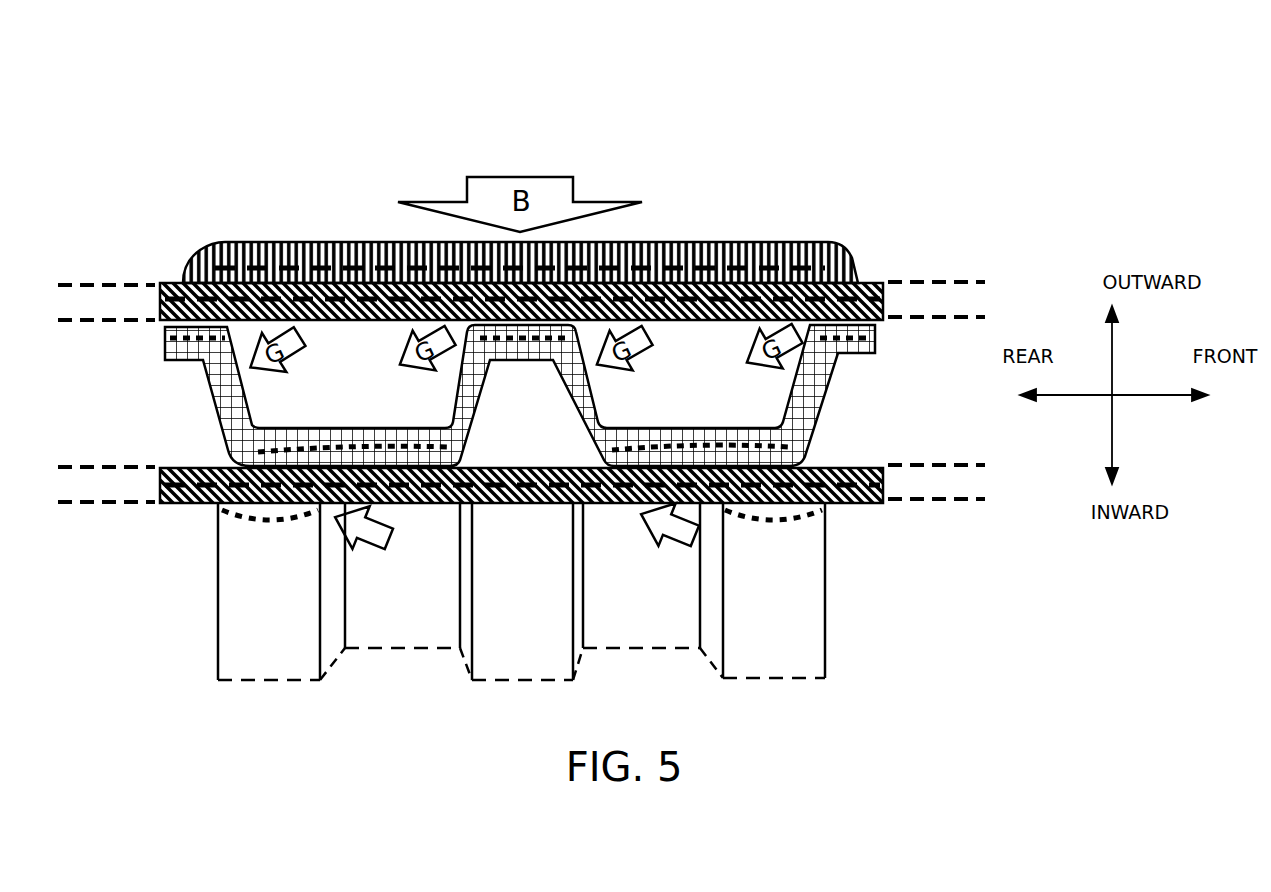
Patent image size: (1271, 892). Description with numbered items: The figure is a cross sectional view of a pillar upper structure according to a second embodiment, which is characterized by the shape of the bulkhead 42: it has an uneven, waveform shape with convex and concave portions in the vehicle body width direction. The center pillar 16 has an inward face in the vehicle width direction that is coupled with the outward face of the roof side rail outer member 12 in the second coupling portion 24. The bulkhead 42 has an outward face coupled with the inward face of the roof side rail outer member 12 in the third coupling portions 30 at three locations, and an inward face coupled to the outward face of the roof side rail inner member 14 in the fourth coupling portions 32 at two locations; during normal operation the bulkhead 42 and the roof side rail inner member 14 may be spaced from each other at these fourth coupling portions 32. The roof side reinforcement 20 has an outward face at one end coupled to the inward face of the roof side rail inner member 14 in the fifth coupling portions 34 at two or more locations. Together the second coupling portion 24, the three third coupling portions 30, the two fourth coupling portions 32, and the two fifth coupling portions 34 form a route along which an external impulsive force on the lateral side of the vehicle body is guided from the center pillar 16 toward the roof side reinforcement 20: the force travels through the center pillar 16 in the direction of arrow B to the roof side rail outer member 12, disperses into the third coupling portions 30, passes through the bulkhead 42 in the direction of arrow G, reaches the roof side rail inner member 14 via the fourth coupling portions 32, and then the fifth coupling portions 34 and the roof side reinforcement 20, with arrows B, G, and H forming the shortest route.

The roof side rail outer member 12 is at (883, 290).
The roof side rail inner member 14 is at (885, 485).
The center pillar 16 is at (268, 243).
The roof side reinforcement 20 is at (787, 615).
The second coupling portion 24 is at (740, 240).
The third coupling portions 30 is at (168, 340).
The fourth coupling portions 32 is at (402, 505).
The fifth coupling portions 34 is at (215, 515).
The bulkhead 42 is at (840, 380).